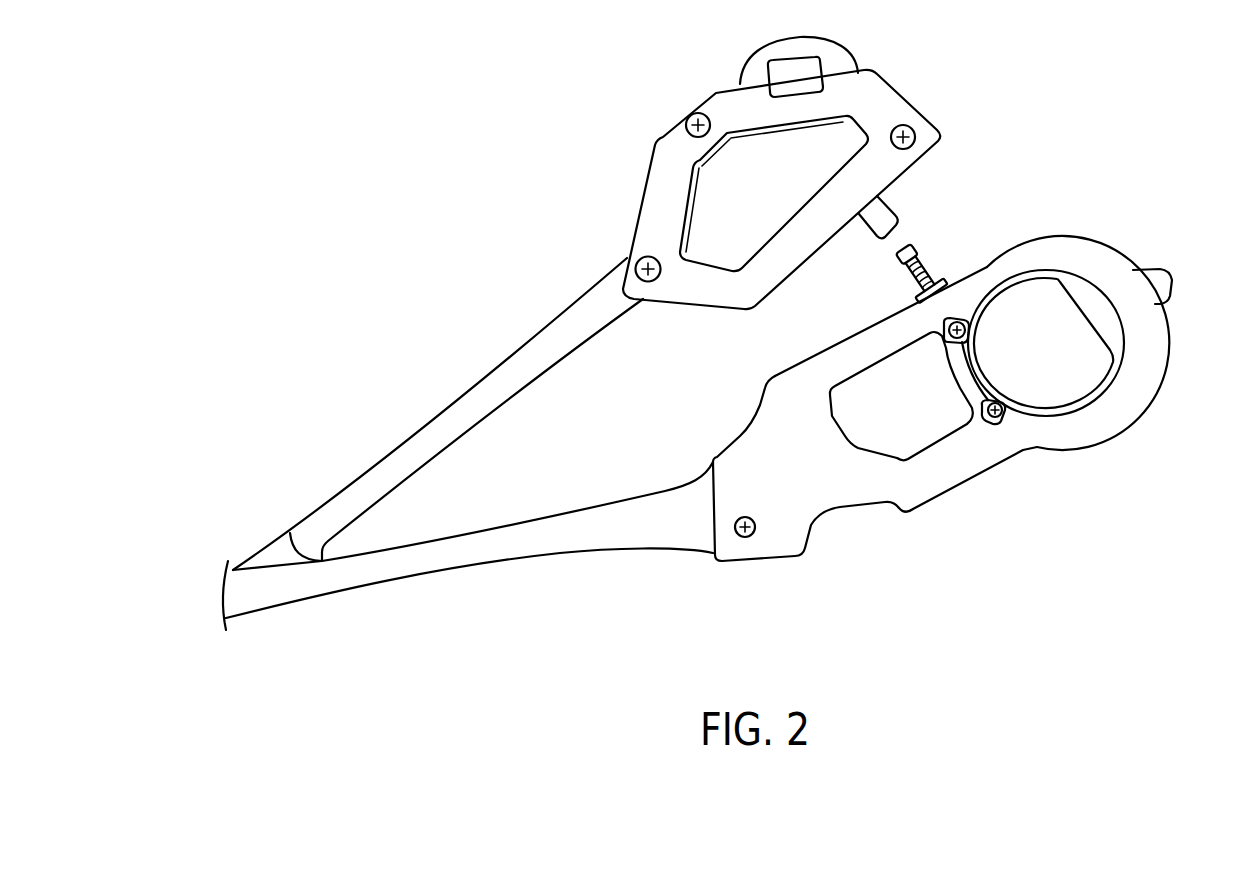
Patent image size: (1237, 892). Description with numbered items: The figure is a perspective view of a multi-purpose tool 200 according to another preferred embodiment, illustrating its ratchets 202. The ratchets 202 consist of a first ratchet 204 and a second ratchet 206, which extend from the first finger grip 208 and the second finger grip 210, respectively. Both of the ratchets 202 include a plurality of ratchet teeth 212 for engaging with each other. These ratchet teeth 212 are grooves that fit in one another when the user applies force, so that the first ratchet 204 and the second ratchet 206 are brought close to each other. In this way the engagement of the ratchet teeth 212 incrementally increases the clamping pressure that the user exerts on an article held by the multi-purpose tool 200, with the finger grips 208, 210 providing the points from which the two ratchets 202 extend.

The multi-purpose tool 200 is at (399, 80).
The ratchets 202 is at (986, 224).
The first ratchet 204 is at (931, 294).
The second ratchet 206 is at (898, 220).
The first finger grip 208 is at (1119, 252).
The second finger grip 210 is at (905, 97).
The ratchet teeth 212 is at (899, 264).